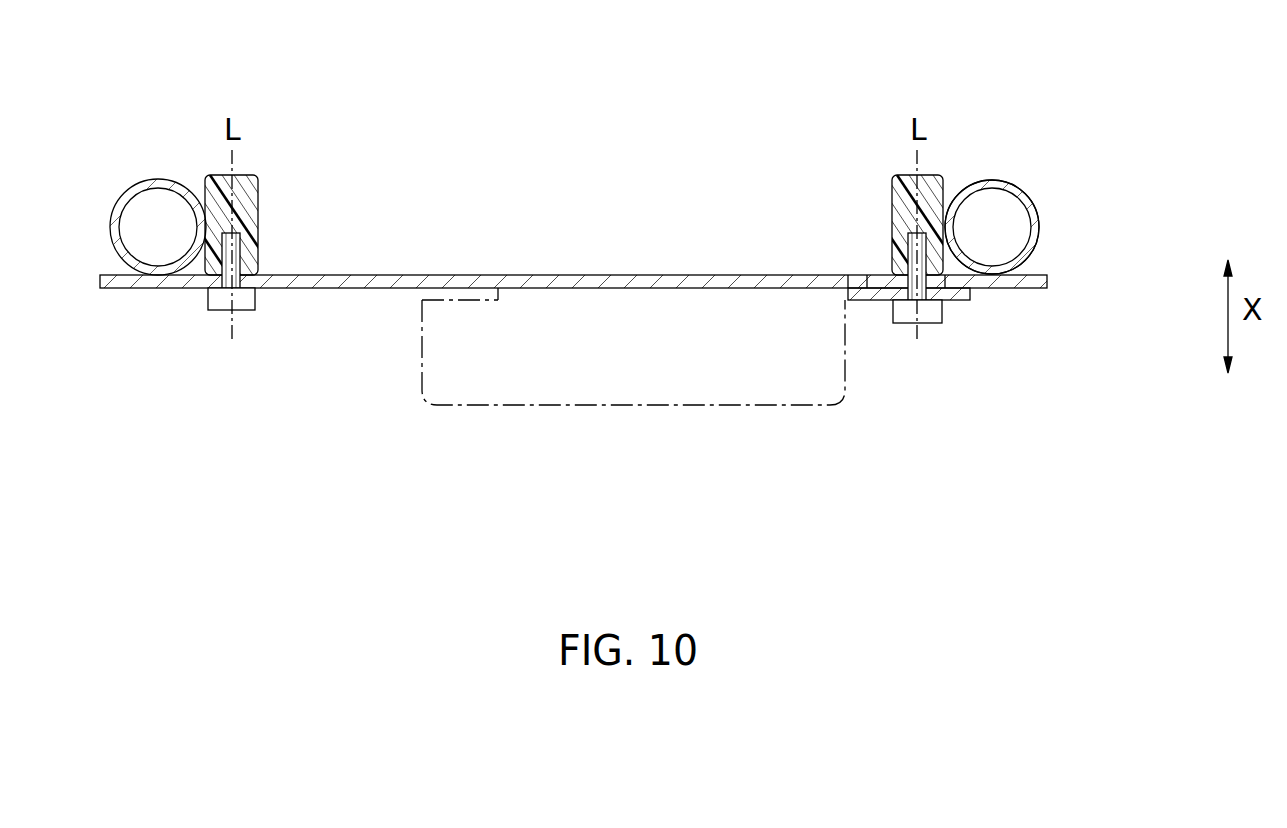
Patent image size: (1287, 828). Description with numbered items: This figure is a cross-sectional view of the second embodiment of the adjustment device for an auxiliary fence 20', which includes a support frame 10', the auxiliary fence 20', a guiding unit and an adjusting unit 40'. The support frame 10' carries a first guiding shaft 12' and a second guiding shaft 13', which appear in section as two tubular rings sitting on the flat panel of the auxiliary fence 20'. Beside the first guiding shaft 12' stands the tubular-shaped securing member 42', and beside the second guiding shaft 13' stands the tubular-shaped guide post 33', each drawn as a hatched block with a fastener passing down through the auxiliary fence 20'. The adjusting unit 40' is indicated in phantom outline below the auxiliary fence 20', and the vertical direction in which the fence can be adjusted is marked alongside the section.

The support frame 10' is at (1044, 186).
The first guiding shaft 12' is at (1022, 225).
The second guiding shaft 13' is at (188, 188).
The auxiliary fence 20' is at (642, 307).
The guide post 33' is at (241, 236).
The securing member 42' is at (910, 246).
The adjusting unit 40' is at (639, 410).